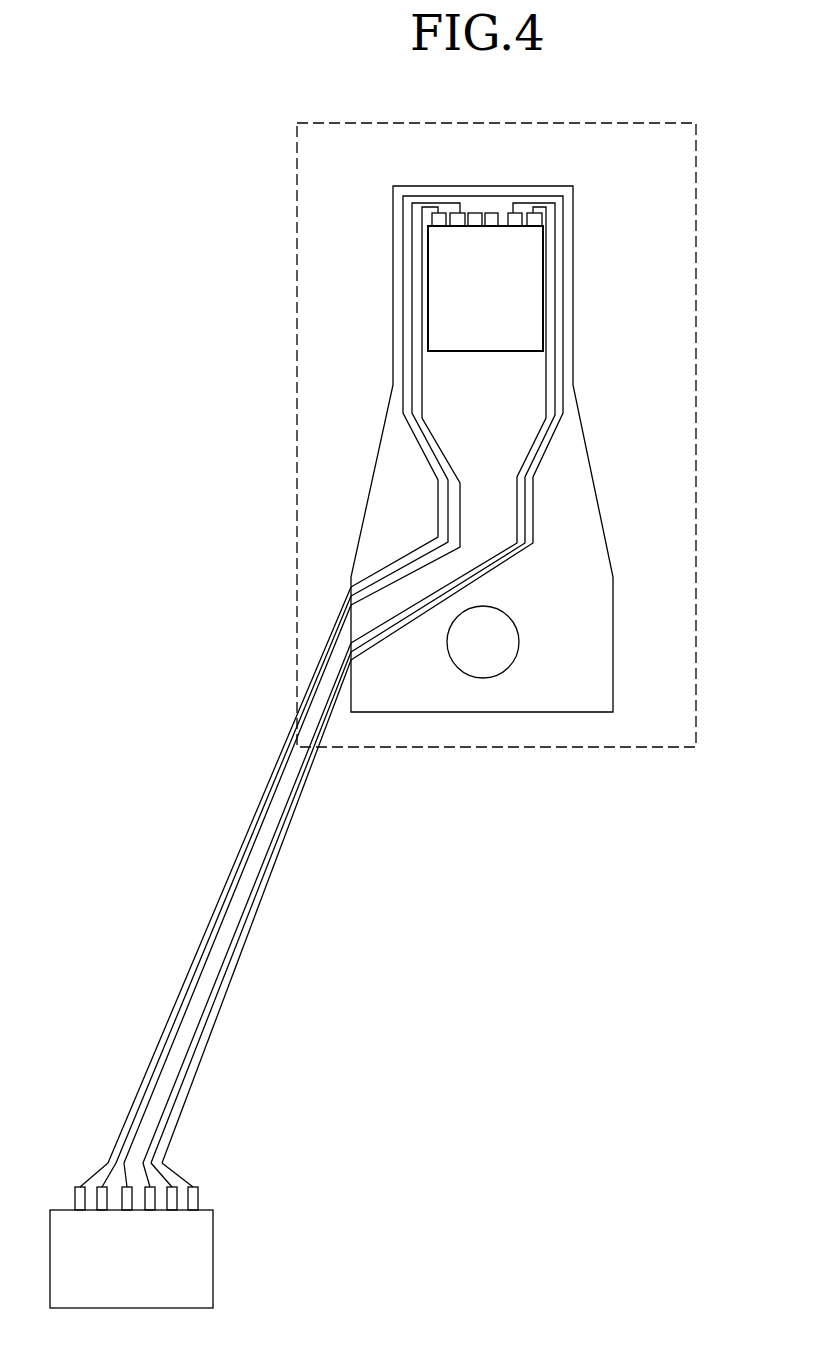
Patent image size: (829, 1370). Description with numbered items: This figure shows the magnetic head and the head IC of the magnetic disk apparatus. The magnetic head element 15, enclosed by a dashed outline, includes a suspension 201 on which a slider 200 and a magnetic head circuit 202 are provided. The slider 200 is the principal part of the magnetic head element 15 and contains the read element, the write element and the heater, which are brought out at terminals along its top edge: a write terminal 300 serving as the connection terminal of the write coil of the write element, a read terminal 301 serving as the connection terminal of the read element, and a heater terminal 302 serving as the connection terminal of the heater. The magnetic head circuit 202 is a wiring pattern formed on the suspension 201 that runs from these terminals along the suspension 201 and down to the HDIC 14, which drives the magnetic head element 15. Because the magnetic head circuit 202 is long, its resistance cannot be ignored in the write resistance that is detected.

The head IC (HDIC) 14 is at (215, 1248).
The magnetic head element 15 is at (696, 237).
The slider 200 is at (543, 258).
The suspension 201 is at (597, 487).
The magnetic head circuit 202 is at (535, 533).
The write terminal 300 is at (512, 212).
The read terminal 301 is at (480, 212).
The heater terminal 302 is at (437, 212).